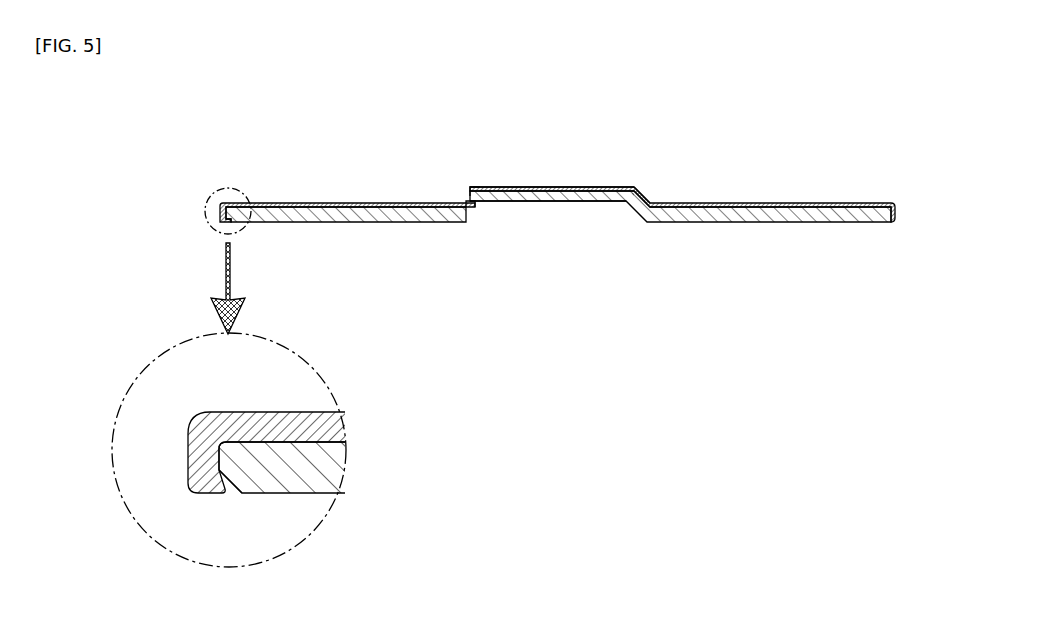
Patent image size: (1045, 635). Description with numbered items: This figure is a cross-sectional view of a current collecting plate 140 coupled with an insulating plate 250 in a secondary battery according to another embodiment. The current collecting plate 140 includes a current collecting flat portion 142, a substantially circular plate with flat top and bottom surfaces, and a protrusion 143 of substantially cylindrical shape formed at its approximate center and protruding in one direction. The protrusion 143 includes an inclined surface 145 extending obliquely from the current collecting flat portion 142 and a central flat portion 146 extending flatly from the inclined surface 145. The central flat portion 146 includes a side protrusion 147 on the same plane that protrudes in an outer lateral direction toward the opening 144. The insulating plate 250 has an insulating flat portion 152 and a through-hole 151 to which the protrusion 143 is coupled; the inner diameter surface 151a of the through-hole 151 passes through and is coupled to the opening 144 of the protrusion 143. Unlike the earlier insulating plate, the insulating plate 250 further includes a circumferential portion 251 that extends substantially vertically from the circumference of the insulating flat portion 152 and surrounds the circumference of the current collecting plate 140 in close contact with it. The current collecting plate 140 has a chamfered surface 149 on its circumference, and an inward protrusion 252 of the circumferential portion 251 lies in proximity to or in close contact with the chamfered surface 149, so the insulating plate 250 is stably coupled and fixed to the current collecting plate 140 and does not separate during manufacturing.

The current collecting plate 140 is at (556, 368).
The current collecting flat portion 142 is at (746, 222).
The protrusion 143 is at (640, 172).
The opening 144 is at (467, 201).
The inclined surface 145 is at (642, 193).
The central flat portion 146 is at (572, 187).
The side protrusion 147 is at (470, 188).
The chamfered surface 149 is at (242, 496).
The through-hole 151 is at (553, 208).
The inner diameter surface 151a is at (497, 208).
The insulating flat portion 152 is at (338, 202).
The insulating plate 250 is at (504, 380).
The circumferential portion 251 is at (200, 455).
The bent end portion of cover film 252 is at (228, 496).